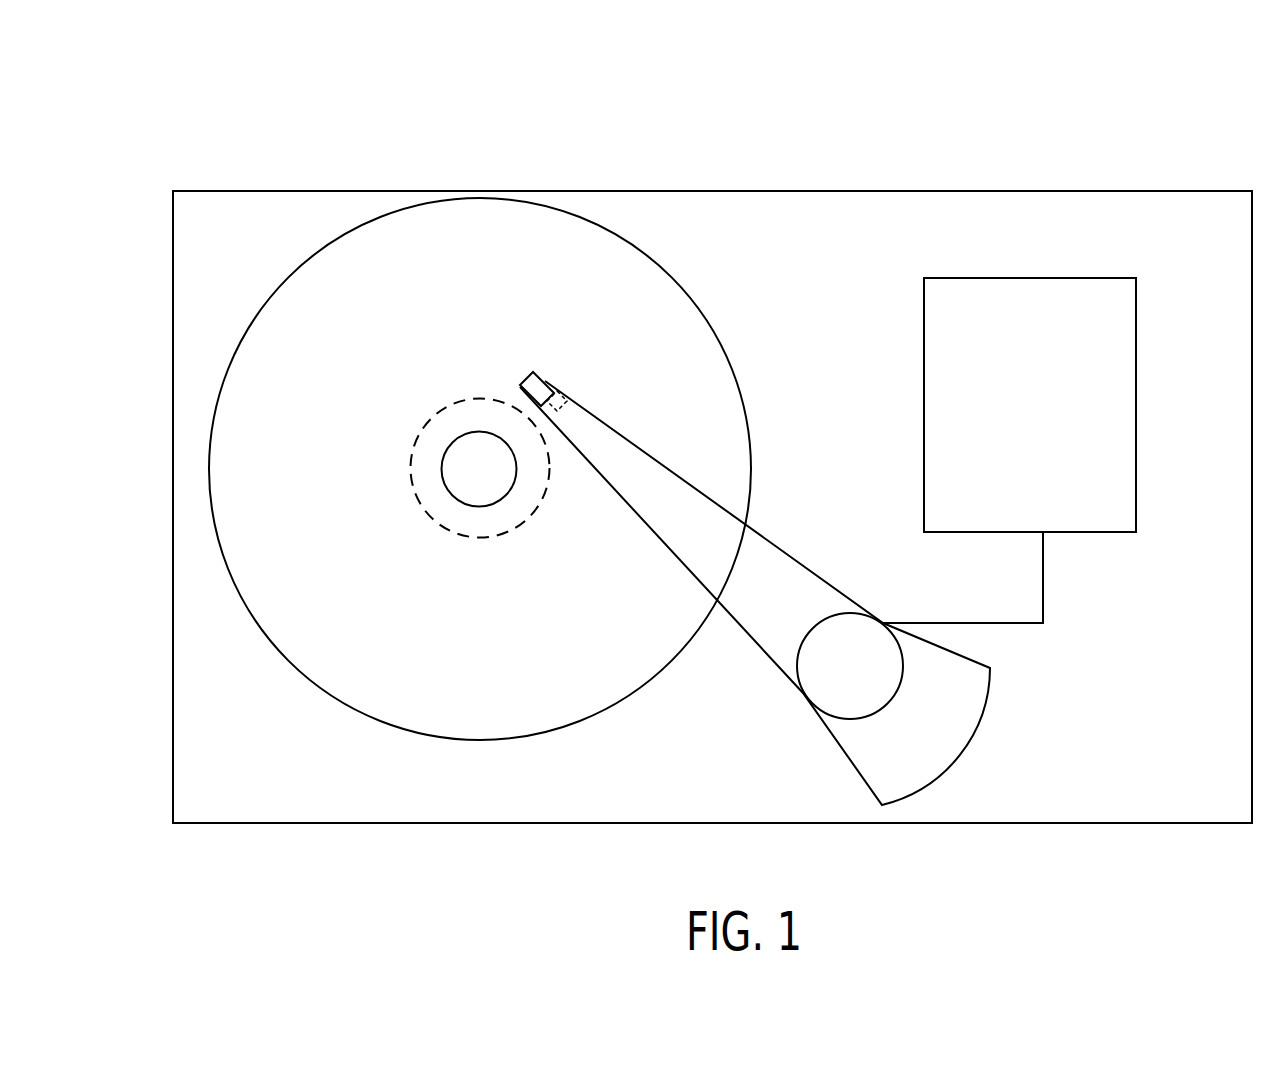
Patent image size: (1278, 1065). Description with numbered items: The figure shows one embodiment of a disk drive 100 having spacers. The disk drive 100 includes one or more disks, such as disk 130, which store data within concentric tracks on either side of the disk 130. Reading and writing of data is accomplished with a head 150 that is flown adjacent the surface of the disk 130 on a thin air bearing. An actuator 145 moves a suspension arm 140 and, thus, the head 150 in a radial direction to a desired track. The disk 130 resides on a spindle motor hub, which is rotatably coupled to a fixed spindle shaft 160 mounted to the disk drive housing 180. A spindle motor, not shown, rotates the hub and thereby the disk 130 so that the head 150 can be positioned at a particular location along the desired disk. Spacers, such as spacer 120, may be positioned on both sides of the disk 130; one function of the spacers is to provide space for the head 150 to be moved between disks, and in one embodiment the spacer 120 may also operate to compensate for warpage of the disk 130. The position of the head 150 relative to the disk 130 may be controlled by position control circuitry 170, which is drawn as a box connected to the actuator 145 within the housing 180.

The disk drive 100 is at (1226, 94).
The spacer 120 is at (427, 513).
The disk 130 is at (340, 703).
The suspension arm 140 is at (773, 543).
The actuator 145 is at (972, 745).
The head 150 is at (553, 386).
The spindle shaft 160 is at (498, 481).
The position control circuitry 170 is at (1038, 463).
The disk drive housing 180 is at (867, 192).